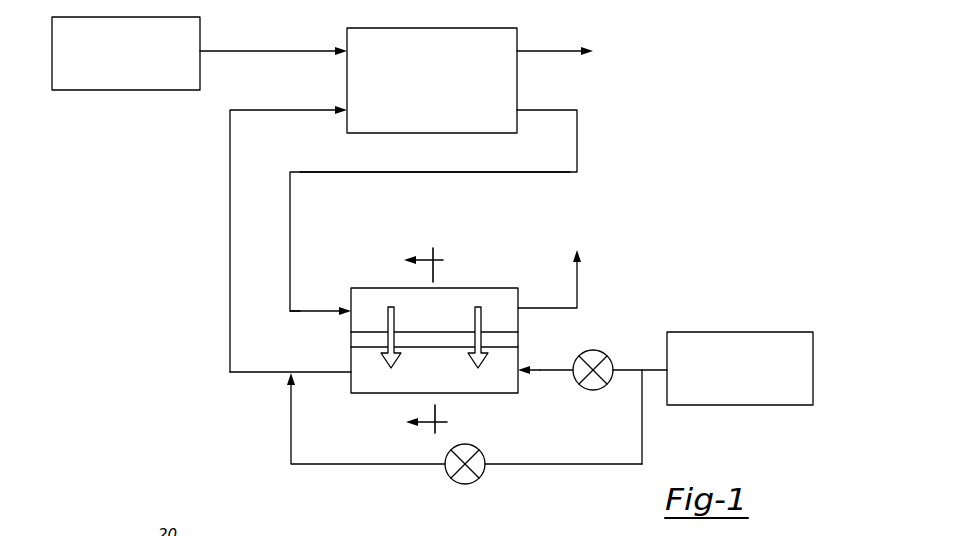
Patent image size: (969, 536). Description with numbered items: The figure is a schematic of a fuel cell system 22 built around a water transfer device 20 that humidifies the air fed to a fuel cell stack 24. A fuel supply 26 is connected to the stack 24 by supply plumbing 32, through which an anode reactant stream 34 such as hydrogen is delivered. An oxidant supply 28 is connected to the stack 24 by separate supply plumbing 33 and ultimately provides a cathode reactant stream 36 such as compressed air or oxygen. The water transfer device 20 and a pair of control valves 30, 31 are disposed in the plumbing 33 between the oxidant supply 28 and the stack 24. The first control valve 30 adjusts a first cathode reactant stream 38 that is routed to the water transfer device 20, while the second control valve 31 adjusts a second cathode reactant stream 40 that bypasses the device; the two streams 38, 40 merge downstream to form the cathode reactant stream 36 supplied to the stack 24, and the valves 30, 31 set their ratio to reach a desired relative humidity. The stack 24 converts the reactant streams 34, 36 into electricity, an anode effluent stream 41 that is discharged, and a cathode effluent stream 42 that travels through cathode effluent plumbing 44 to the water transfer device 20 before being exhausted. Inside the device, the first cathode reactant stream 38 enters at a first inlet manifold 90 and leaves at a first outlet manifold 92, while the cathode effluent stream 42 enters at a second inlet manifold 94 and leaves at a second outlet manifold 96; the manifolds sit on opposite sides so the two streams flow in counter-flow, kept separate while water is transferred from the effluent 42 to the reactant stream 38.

The water transfer device 20 is at (372, 288).
The fuel cell system 22 is at (692, 22).
The fuel cell stack 24 is at (518, 37).
The fuel supply 26 is at (200, 37).
The oxidant supply 28 is at (726, 332).
The first control valve 30 is at (607, 354).
The second control valve 31 is at (480, 446).
The supply plumbing 32 is at (273, 30).
The supply plumbing 33 is at (650, 368).
The anode reactant stream 34 is at (300, 51).
The cathode reactant stream 36 is at (230, 227).
The first cathode reactant stream 38 is at (553, 369).
The second cathode reactant stream 40 is at (362, 465).
The anode effluent stream 41 is at (568, 57).
The cathode effluent stream 42 is at (456, 212).
The cathode effluent plumbing 44 is at (519, 173).
The first inlet manifold 90 is at (545, 363).
The first outlet manifold 92 is at (350, 378).
The second inlet manifold 94 is at (351, 303).
The second outlet manifold 96 is at (521, 298).